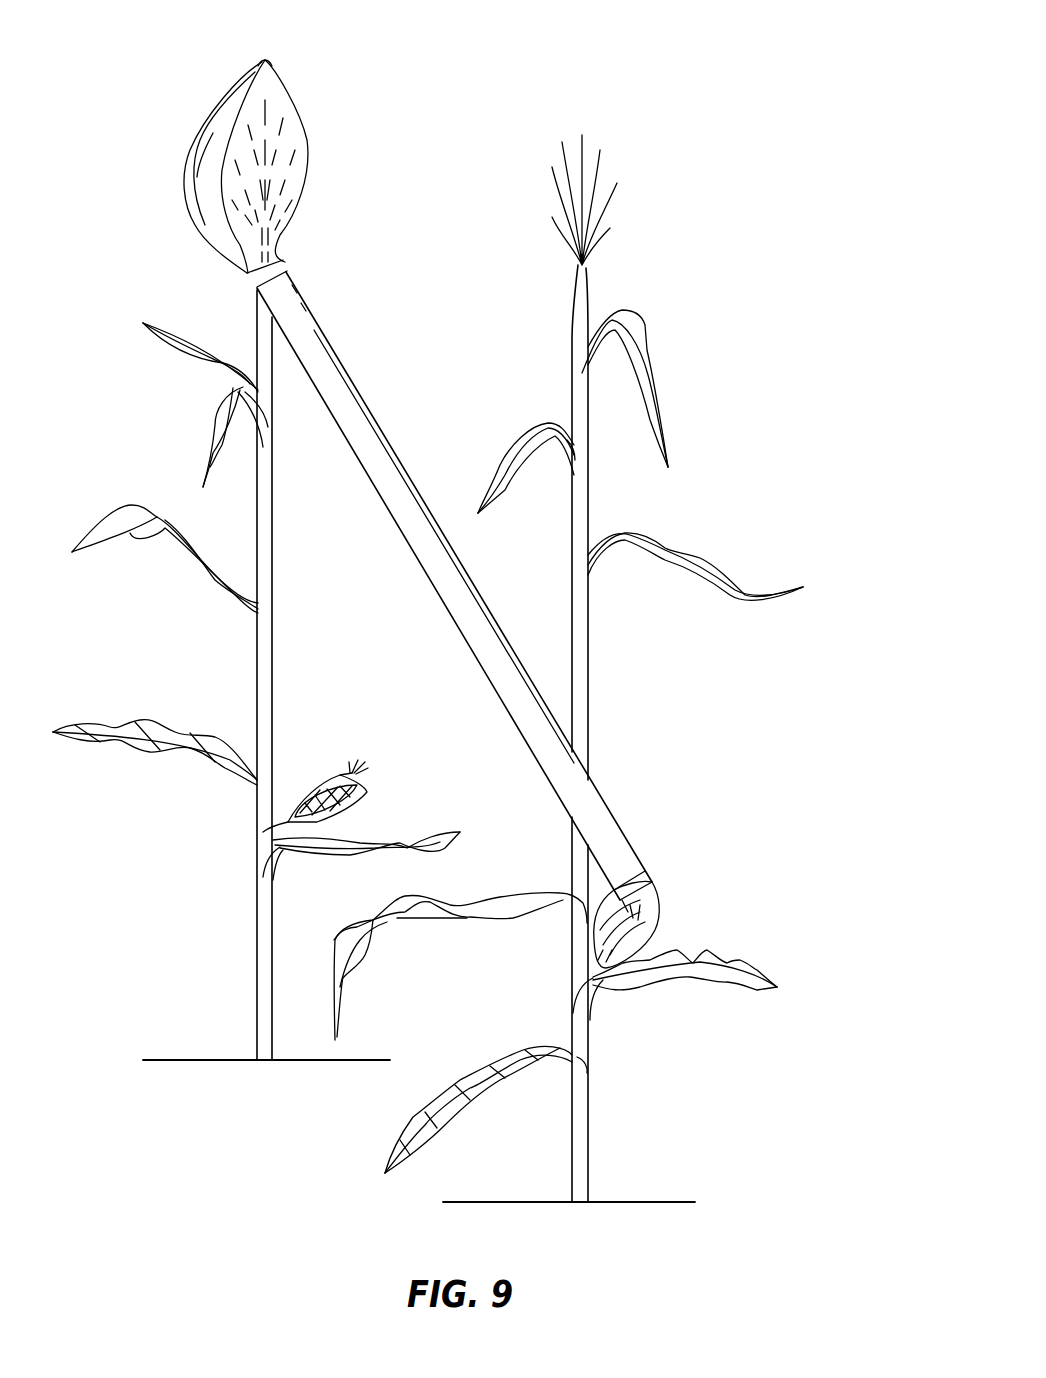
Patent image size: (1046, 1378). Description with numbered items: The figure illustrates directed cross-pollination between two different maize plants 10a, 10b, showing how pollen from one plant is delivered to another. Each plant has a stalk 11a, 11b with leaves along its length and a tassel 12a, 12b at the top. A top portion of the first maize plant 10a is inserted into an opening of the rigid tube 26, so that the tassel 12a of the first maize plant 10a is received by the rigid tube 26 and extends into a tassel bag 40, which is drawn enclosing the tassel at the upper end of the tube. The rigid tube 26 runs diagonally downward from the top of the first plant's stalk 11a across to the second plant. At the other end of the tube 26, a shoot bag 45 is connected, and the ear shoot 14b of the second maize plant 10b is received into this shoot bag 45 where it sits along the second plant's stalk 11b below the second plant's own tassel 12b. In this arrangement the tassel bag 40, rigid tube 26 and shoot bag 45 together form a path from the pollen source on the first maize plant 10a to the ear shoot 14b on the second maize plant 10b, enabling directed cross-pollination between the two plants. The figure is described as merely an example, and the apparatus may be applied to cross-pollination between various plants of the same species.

The first maize plant 10a is at (165, 250).
The second maize plant 10b is at (700, 356).
The stalk 11a is at (245, 926).
The stalk 11b is at (608, 1115).
The tassel 12a is at (307, 143).
The tassel 12b is at (597, 178).
The ear shoot 14b is at (662, 937).
The rigid tube 26 is at (367, 438).
The tassel bag 40 is at (282, 80).
The shoot bag 45 is at (650, 893).